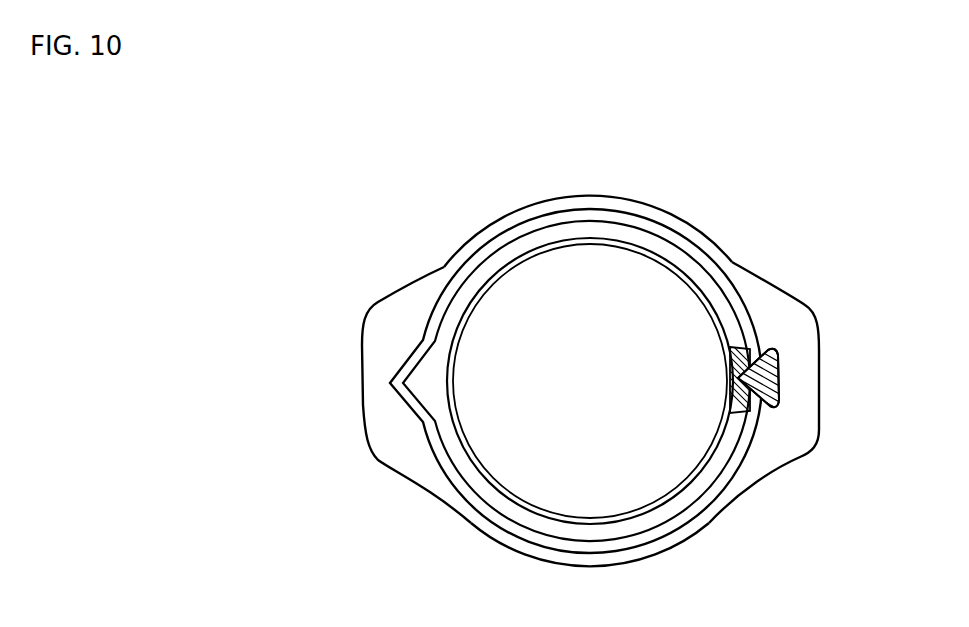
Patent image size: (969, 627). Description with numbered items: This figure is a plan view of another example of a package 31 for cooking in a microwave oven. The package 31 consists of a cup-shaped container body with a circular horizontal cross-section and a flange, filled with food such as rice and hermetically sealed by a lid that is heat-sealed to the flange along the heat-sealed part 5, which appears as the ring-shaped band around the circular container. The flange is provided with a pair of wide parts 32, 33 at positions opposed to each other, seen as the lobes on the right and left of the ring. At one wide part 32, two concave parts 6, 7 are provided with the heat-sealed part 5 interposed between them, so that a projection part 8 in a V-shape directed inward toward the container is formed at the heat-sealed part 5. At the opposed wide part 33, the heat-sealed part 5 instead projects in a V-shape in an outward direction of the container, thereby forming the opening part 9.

The package 31 is at (603, 133).
The heat-sealed part 5 is at (693, 252).
The wide part 32 is at (783, 310).
The wide part 33 is at (413, 457).
The opening part 9 is at (390, 383).
The concave part 6 is at (747, 413).
The concave part 7 is at (745, 381).
The projection part 8 is at (775, 358).